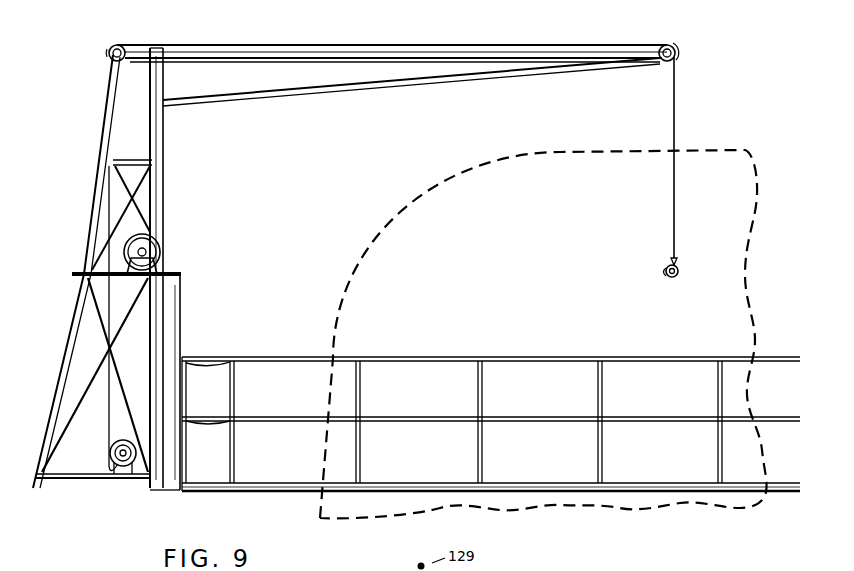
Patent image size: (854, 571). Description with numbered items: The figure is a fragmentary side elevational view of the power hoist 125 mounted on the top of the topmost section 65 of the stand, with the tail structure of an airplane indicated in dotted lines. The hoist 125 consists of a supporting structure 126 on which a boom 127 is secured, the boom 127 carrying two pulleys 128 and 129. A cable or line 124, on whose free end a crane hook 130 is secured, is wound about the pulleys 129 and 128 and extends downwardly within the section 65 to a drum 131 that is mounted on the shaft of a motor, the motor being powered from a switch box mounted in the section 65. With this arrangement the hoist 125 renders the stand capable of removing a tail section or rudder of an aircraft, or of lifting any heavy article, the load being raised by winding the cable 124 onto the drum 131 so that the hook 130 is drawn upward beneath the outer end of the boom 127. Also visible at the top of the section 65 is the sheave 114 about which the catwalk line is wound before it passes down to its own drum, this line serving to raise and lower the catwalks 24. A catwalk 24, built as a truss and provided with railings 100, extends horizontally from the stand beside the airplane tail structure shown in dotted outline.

The catwalk 24 is at (576, 499).
The railing 100 is at (455, 357).
The top section 65 is at (190, 300).
The power hoist 125 is at (170, 142).
The supporting structure 126 is at (97, 212).
The sheave 114 is at (160, 247).
The cable or line 124 is at (313, 45).
The boom 127 is at (430, 55).
The pulley 128 is at (108, 56).
The pulley 129 is at (663, 62).
The crane hook 130 is at (678, 265).
The drum 131 is at (122, 460).